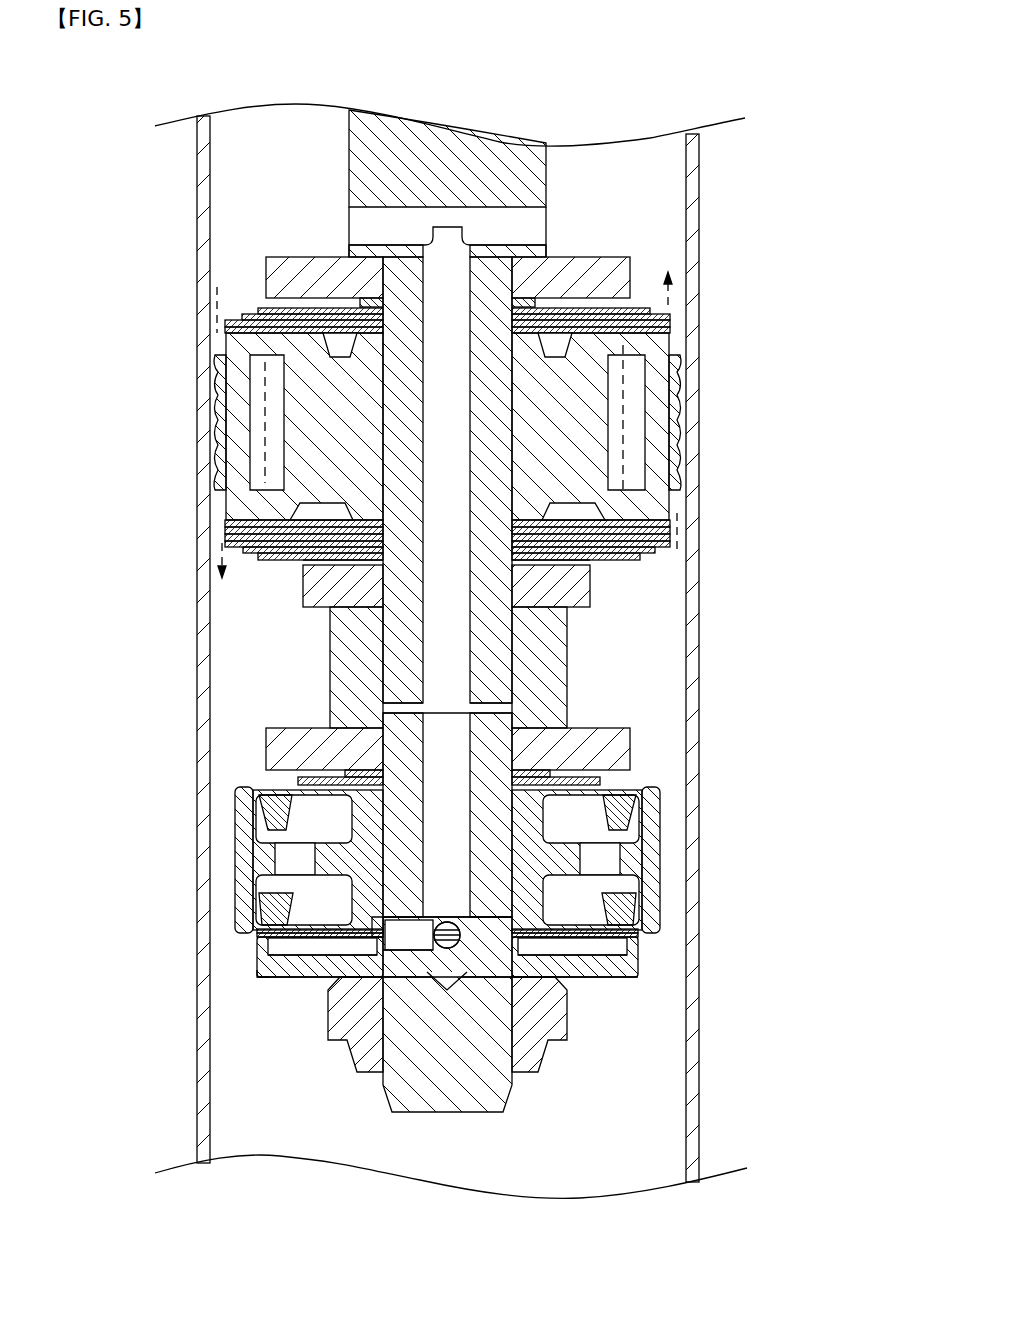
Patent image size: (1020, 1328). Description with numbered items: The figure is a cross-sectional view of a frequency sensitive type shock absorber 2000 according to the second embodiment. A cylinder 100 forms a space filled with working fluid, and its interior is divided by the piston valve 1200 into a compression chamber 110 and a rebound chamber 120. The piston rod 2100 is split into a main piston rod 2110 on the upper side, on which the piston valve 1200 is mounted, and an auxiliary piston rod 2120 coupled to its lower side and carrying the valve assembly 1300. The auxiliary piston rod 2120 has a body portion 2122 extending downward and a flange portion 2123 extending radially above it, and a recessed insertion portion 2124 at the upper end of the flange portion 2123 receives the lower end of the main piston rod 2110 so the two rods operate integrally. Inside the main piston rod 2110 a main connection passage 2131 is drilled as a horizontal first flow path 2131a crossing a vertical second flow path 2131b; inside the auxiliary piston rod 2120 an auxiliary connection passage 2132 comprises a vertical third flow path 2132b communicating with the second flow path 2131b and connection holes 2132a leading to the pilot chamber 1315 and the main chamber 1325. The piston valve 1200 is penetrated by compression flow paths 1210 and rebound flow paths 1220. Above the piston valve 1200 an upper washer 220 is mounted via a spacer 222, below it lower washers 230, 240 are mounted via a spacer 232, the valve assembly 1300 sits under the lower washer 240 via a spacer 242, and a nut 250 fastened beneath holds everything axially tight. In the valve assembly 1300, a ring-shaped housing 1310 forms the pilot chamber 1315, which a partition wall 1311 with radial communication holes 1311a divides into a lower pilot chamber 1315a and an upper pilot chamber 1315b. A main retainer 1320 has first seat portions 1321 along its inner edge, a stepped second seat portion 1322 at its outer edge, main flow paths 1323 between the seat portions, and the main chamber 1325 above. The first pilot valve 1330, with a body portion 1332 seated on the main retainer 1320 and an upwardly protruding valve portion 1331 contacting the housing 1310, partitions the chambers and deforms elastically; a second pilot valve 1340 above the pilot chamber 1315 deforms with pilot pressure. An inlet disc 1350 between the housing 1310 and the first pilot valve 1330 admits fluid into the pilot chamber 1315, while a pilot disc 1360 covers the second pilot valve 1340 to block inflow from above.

The frequency sensitive type shock absorber 2000 is at (107, 114).
The cylinder 100 is at (699, 198).
The compression chamber 110 is at (242, 1085).
The rebound chamber 120 is at (236, 207).
The piston rod 2100 is at (391, 679).
The main piston rod 2110 is at (340, 125).
The auxiliary piston rod 2120 is at (311, 678).
The body portion 2122 is at (395, 755).
The flange portion 2123 is at (340, 628).
The insertion portion 2124 is at (383, 709).
The main connection passage 2131 is at (511, 222).
The first flow path 2131a is at (515, 207).
The second flow path 2131b is at (470, 272).
The auxiliary connection passage 2132 is at (283, 936).
The connection holes 2132a is at (378, 945).
The third flow path 2132b is at (378, 914).
The upper washer 220 is at (266, 272).
The spacer 222 is at (362, 300).
The piston valve 1200 is at (445, 425).
The compression flow paths 1210 is at (642, 434).
The rebound flow paths 1220 is at (262, 428).
The lower washer 230 is at (478, 593).
The spacer 232 is at (540, 565).
The lower washer 240 is at (630, 752).
The spacer 242 is at (548, 772).
The valve assembly 1300 is at (479, 907).
The housing 1310 is at (243, 830).
The partition wall 1311 is at (290, 838).
The communication holes 1311a is at (295, 860).
The pilot chamber 1315 is at (542, 877).
The lower pilot chamber 1315a is at (598, 886).
The upper pilot chamber 1315b is at (600, 843).
The main retainer 1320 is at (475, 982).
The first seat portions 1321 is at (625, 968).
The second seat portion 1322 is at (627, 950).
The main flow paths 1323 is at (600, 985).
The main chamber 1325 is at (330, 975).
The first pilot valve 1330 is at (538, 921).
The valve portion 1331 is at (590, 929).
The body portion 1332 is at (590, 935).
The second pilot valve 1340 is at (481, 860).
The inlet disc 1350 is at (540, 925).
The pilot disc 1360 is at (600, 782).
The nut 250 is at (335, 1027).